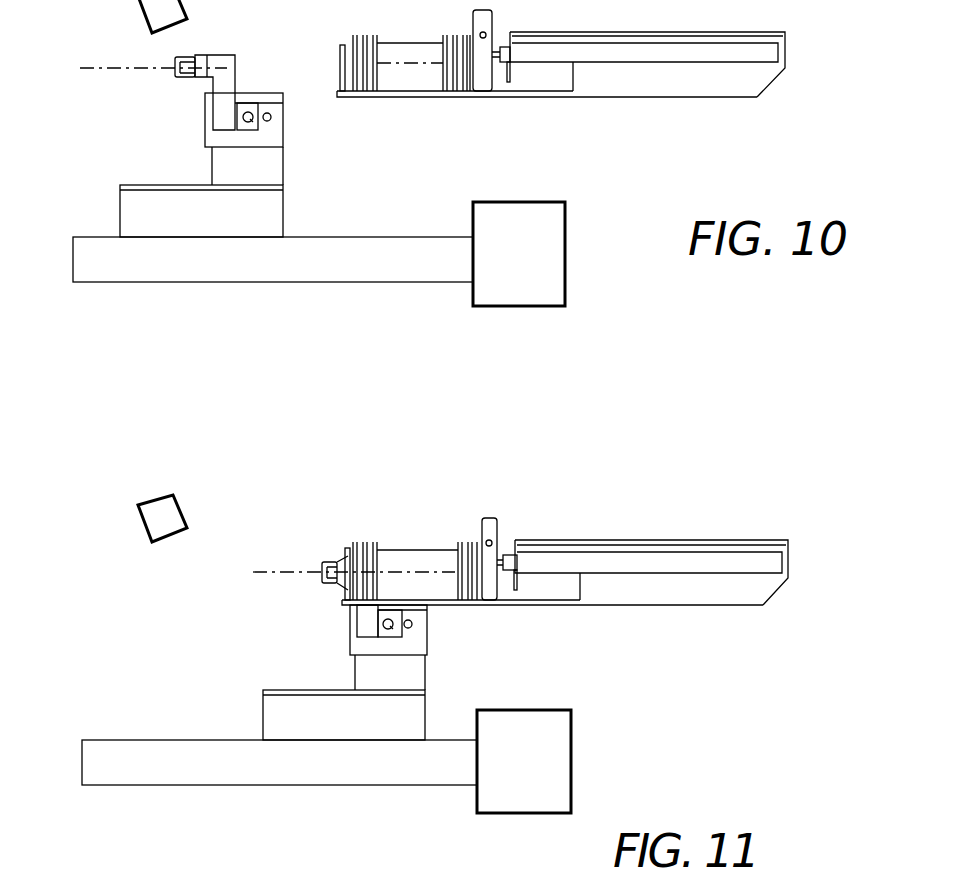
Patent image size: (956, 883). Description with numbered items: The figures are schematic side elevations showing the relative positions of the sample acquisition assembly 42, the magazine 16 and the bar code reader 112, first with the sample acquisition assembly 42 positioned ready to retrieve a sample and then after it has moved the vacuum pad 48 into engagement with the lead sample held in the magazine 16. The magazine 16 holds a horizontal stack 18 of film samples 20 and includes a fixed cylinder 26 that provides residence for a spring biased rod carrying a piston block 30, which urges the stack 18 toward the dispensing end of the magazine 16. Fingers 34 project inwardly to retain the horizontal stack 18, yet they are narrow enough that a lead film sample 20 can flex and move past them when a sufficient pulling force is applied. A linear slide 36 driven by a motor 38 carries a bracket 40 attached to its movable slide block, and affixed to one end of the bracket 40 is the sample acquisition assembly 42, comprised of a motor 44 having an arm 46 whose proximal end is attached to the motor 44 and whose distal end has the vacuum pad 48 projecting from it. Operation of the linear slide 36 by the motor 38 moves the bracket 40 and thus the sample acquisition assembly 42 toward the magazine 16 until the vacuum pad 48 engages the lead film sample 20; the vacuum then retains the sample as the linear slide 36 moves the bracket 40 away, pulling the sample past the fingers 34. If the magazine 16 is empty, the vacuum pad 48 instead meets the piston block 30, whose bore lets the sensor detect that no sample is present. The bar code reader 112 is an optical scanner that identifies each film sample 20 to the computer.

In FIG. 10, the magazine 16 is at (772, 83).
In FIG. 11, the magazine 16 is at (763, 590).
In FIG. 11, the horizontal stack 18 is at (413, 560).
In FIG. 10, the film sample 20 is at (348, 37).
In FIG. 10, the fixed cylinder 26 is at (675, 63).
In FIG. 11, the fixed cylinder 26 is at (667, 560).
In FIG. 10, the piston block 30 is at (485, 78).
In FIG. 11, the piston block 30 is at (490, 590).
In FIG. 10, the fingers 34 is at (340, 57).
In FIG. 10, the linear slide 36 is at (377, 277).
In FIG. 11, the linear slide 36 is at (360, 777).
In FIG. 10, the motor 38 is at (537, 259).
In FIG. 11, the motor 38 is at (545, 757).
In FIG. 10, the bracket 40 is at (268, 208).
In FIG. 11, the bracket 40 is at (271, 708).
In FIG. 10, the sample acquisition assembly 42 is at (132, 141).
In FIG. 10, the motor 44 is at (277, 135).
In FIG. 11, the motor 44 is at (405, 672).
In FIG. 10, the arm 46 is at (222, 55).
In FIG. 11, the arm 46 is at (363, 623).
In FIG. 10, the vacuum pad 48 is at (204, 77).
In FIG. 11, the vacuum pad 48 is at (346, 565).
In FIG. 10, the bar code reader 112 is at (136, 8).
In FIG. 11, the bar code reader 112 is at (172, 517).